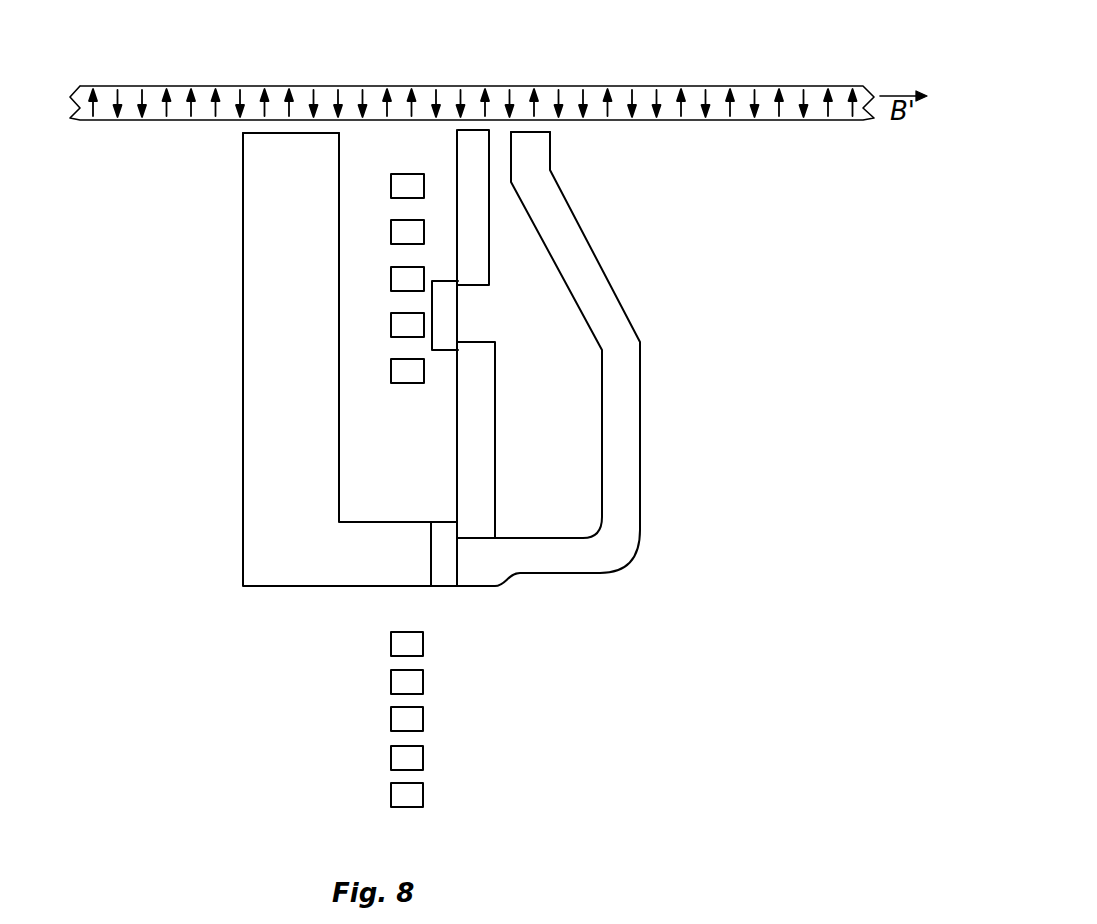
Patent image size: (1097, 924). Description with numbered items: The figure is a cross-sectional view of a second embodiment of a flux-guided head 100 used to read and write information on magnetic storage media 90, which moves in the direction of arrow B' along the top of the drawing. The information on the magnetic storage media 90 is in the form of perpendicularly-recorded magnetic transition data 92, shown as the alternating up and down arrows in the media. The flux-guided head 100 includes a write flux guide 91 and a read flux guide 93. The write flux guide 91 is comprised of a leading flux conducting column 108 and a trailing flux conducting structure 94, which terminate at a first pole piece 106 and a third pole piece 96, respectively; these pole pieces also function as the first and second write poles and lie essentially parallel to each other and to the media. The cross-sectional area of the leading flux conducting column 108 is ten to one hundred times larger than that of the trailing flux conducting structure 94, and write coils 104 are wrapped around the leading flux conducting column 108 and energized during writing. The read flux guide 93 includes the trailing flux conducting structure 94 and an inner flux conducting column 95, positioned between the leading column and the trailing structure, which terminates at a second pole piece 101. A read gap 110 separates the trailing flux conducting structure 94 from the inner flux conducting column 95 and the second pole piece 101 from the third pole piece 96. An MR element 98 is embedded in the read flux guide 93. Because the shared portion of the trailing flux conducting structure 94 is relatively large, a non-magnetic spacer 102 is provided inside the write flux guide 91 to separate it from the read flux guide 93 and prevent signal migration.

The magnetic storage media 90 is at (803, 86).
The write flux guide 91 is at (350, 358).
The perpendicularly-recorded magnetic transition data 92 is at (752, 100).
The read flux guide 93 is at (472, 227).
The trailing flux conducting structure 94 is at (622, 375).
The inner flux conducting column 95 is at (479, 275).
The third pole piece 96 is at (527, 131).
The MR element 98 is at (458, 317).
The flux-guided head 100 is at (677, 532).
The second pole piece 101 is at (468, 145).
The non-magnetic spacer 102 is at (443, 578).
The write coils 104 is at (391, 370).
The first pole piece 106 is at (285, 131).
The leading flux conducting column 108 is at (257, 294).
The read gap 110 is at (503, 140).